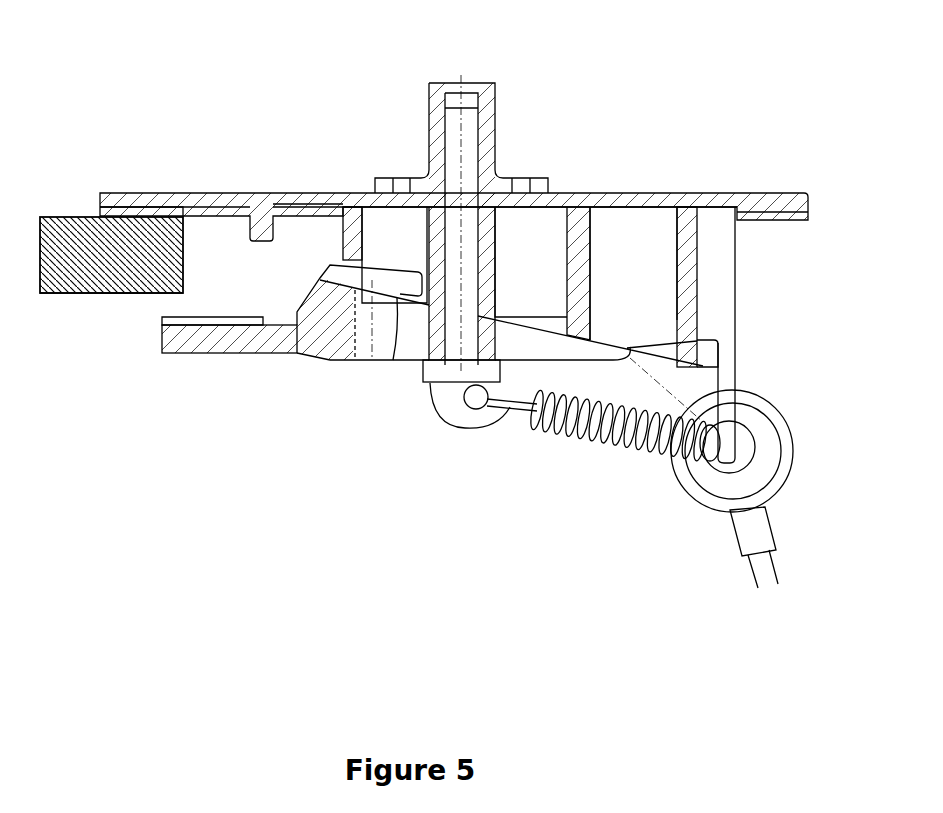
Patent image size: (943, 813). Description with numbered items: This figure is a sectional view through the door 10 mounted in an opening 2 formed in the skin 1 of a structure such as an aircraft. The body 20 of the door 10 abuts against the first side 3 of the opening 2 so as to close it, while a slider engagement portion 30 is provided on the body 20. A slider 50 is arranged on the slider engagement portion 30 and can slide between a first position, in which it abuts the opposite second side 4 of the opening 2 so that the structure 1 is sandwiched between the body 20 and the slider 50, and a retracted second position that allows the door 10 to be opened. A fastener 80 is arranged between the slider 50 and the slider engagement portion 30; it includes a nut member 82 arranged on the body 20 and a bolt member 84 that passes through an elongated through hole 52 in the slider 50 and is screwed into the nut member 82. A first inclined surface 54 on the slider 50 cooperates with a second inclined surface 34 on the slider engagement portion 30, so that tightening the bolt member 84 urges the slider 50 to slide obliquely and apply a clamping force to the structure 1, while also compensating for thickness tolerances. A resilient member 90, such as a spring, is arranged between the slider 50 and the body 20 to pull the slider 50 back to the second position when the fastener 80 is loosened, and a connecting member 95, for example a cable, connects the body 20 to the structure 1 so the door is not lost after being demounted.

The skin 1 is at (79, 277).
The opening 2 is at (183, 252).
The first side 3 is at (78, 216).
The second side 4 is at (100, 294).
The door 10 is at (271, 154).
The body 20 is at (772, 198).
The slider engagement portion 30 is at (680, 254).
The second inclined surface 34 is at (627, 348).
The slider 50 is at (312, 335).
The through hole 52 is at (361, 350).
The first inclined surface 54 is at (398, 300).
The fastener 80 is at (410, 130).
The nut member 82 is at (484, 122).
The bolt member 84 is at (452, 370).
The resilient member 90 is at (622, 440).
The connecting member 95 is at (757, 578).